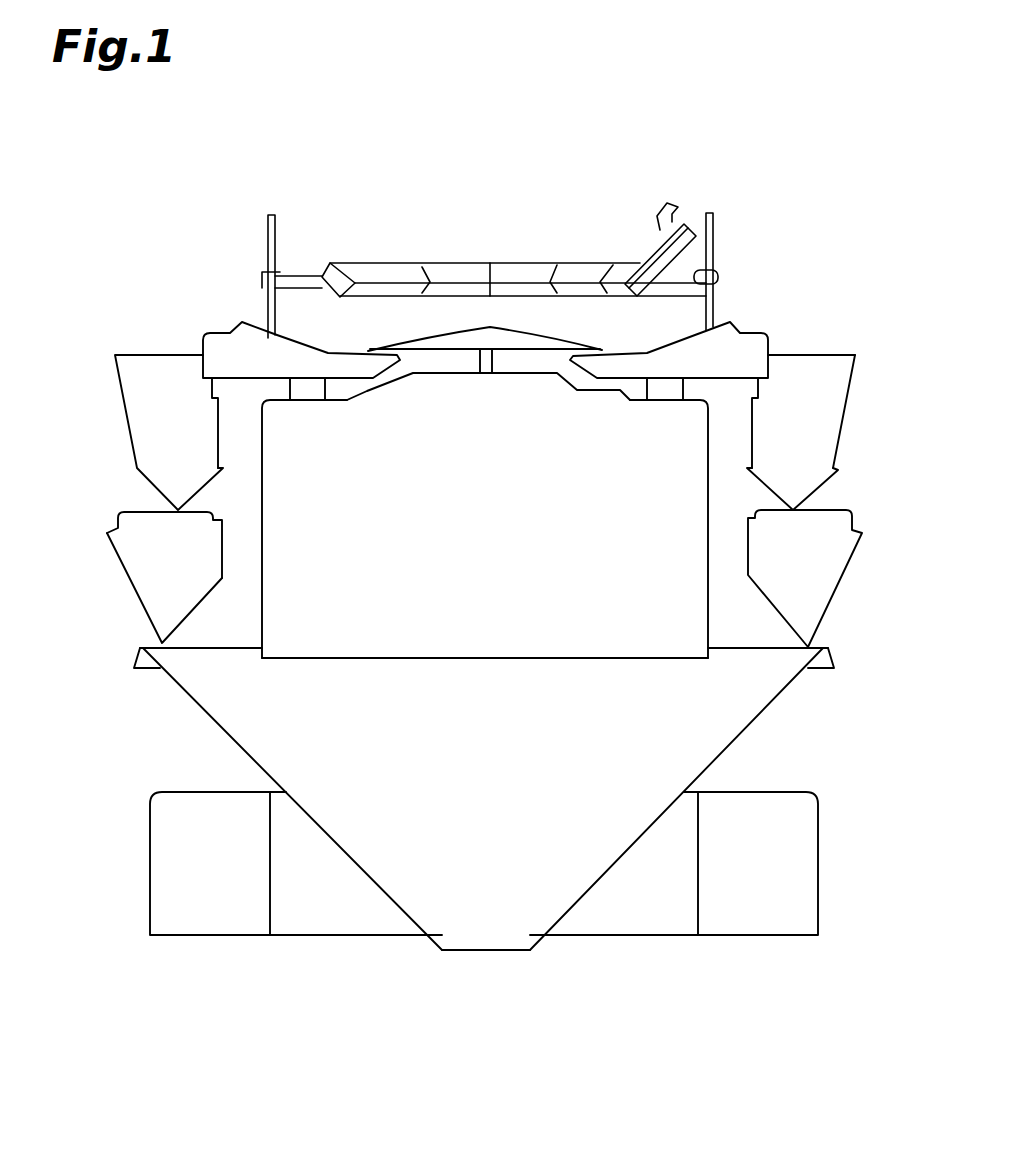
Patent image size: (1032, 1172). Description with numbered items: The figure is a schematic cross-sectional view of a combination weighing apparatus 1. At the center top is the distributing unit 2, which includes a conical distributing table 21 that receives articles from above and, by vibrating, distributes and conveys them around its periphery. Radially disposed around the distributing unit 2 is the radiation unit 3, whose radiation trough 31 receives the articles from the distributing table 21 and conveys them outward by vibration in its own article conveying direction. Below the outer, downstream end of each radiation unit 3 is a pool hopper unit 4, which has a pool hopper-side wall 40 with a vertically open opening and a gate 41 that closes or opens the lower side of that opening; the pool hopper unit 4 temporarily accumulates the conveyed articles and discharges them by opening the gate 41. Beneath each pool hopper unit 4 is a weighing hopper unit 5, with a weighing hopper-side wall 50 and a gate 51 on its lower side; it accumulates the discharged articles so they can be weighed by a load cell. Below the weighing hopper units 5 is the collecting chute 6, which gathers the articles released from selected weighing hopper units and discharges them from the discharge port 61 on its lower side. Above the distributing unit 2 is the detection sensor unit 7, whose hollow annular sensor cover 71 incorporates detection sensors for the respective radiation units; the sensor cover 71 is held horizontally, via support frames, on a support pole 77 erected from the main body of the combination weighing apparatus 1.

The combination weighing apparatus 1 is at (121, 219).
The distributing unit 2 is at (402, 326).
The distributing table 21 is at (460, 350).
The radiation unit 3 is at (126, 329).
The radiation trough 31 is at (232, 343).
The pool hopper unit 4 is at (866, 289).
The pool hopper-side wall 40 is at (857, 382).
The gate 41 is at (812, 490).
The weighing hopper unit 5 is at (93, 496).
The weighing hopper-side wall 50 is at (160, 541).
The gate 51 is at (182, 612).
The collecting chute 6 is at (712, 765).
The discharge port 61 is at (468, 948).
The detection sensor unit 7 is at (620, 205).
The sensor cover 71 is at (585, 268).
The support pole 77 is at (715, 237).